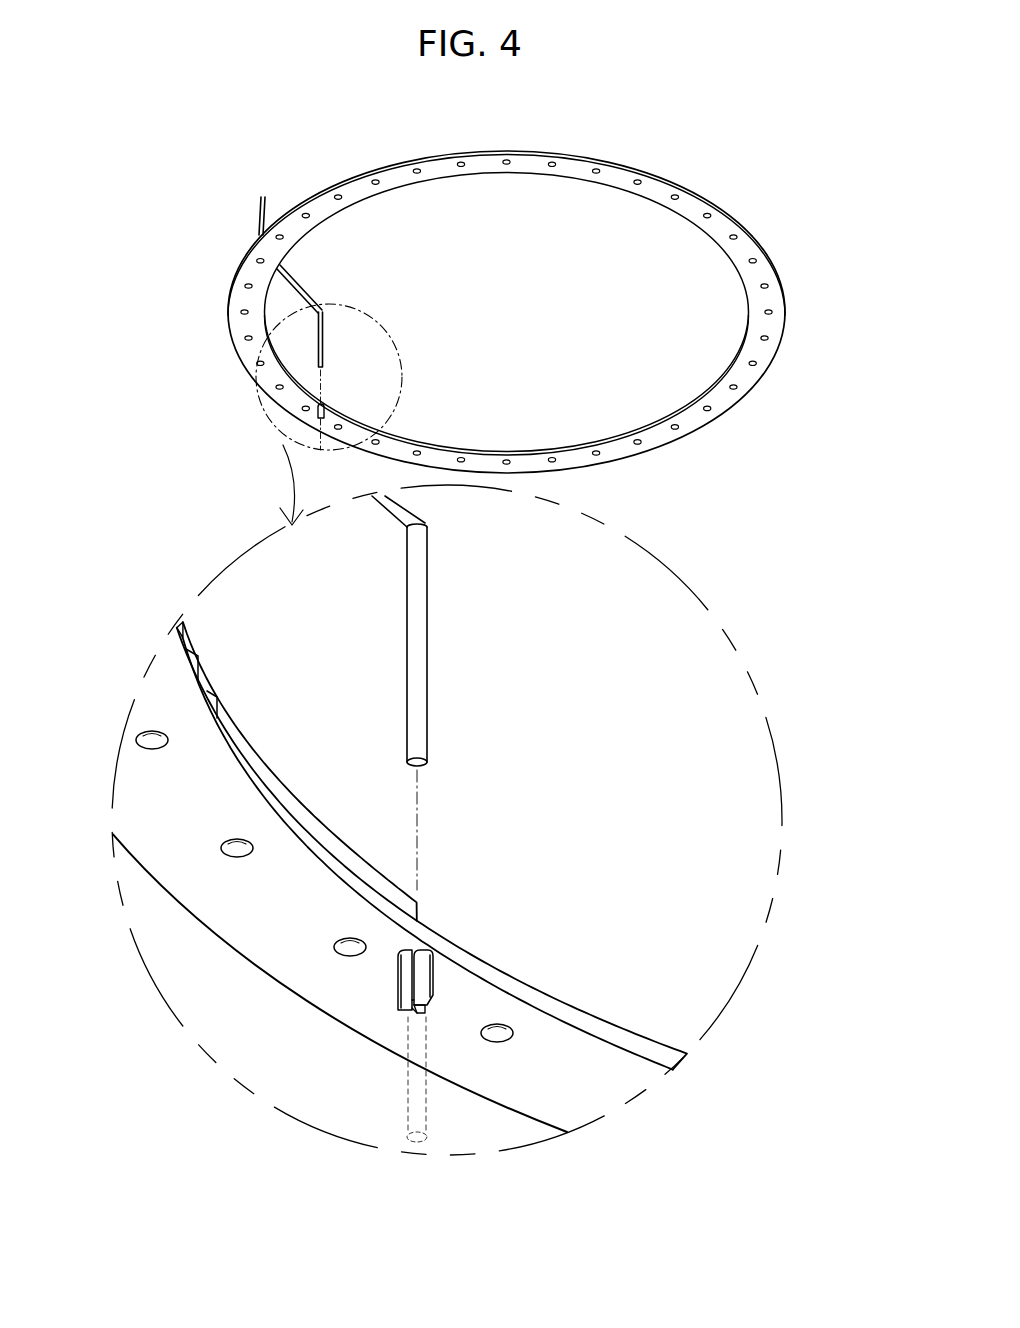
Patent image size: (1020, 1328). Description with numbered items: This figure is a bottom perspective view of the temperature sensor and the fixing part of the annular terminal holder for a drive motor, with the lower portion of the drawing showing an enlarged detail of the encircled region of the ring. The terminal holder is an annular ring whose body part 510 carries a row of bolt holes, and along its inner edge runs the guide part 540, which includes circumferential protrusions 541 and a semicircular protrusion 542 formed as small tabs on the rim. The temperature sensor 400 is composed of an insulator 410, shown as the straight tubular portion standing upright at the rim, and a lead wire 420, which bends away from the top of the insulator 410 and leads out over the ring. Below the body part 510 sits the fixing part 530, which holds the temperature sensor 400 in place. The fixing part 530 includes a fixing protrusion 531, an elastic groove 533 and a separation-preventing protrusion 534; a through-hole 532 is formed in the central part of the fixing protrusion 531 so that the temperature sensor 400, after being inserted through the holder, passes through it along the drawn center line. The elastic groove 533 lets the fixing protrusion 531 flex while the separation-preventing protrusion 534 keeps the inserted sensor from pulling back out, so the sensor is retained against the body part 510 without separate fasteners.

The temperature sensor 400 is at (515, 624).
The insulator 410 is at (324, 330).
The lead wire 420 is at (301, 292).
The body part 510 is at (240, 268).
The fixing part 530 is at (300, 815).
The fixing protrusion 531 is at (400, 982).
The through-hole 532 is at (428, 1000).
The elastic groove 533 is at (412, 1015).
The separation-preventing protrusion 534 is at (425, 1017).
The guide part 540 is at (442, 621).
The circumferential protrusions 541 is at (243, 727).
The semicircular protrusion 542 is at (197, 652).